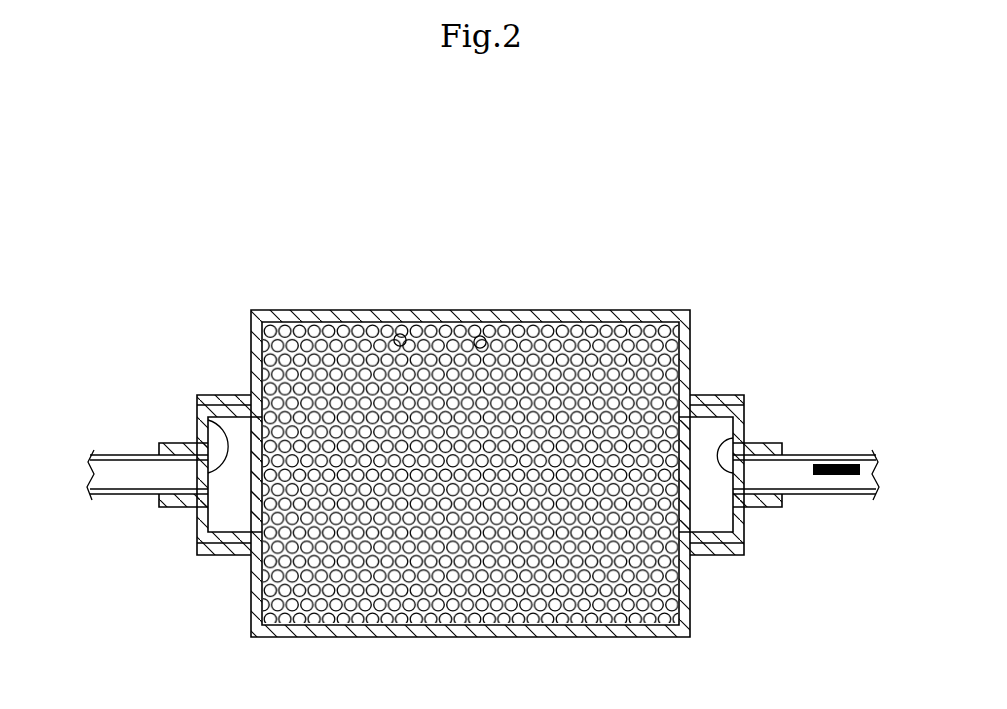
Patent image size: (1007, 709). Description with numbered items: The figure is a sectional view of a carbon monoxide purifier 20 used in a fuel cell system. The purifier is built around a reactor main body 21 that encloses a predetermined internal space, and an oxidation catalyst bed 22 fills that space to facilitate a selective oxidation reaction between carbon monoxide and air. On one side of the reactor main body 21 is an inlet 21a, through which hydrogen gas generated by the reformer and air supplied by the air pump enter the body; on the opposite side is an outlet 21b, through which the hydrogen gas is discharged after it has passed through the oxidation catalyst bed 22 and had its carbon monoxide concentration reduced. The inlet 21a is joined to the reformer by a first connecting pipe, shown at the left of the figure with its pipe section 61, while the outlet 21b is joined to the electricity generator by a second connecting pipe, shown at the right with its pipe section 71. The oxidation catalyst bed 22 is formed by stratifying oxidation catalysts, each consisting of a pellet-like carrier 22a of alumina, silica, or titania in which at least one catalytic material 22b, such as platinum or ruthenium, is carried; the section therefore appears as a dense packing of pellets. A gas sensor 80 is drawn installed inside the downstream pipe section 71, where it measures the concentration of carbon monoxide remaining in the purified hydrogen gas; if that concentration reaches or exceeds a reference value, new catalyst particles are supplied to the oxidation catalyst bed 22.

The carbon monoxide purifier 20 is at (693, 281).
The reactor main body 21 is at (306, 311).
The inlet 21a is at (208, 424).
The outlet 21b is at (733, 438).
The oxidation catalyst bed 22 is at (510, 326).
The pellet-like carrier 22a is at (400, 333).
The catalytic material 22b is at (481, 334).
The inlet pipe 61 is at (110, 455).
The outlet pipe 71 is at (800, 455).
The gas sensor 80 is at (852, 462).